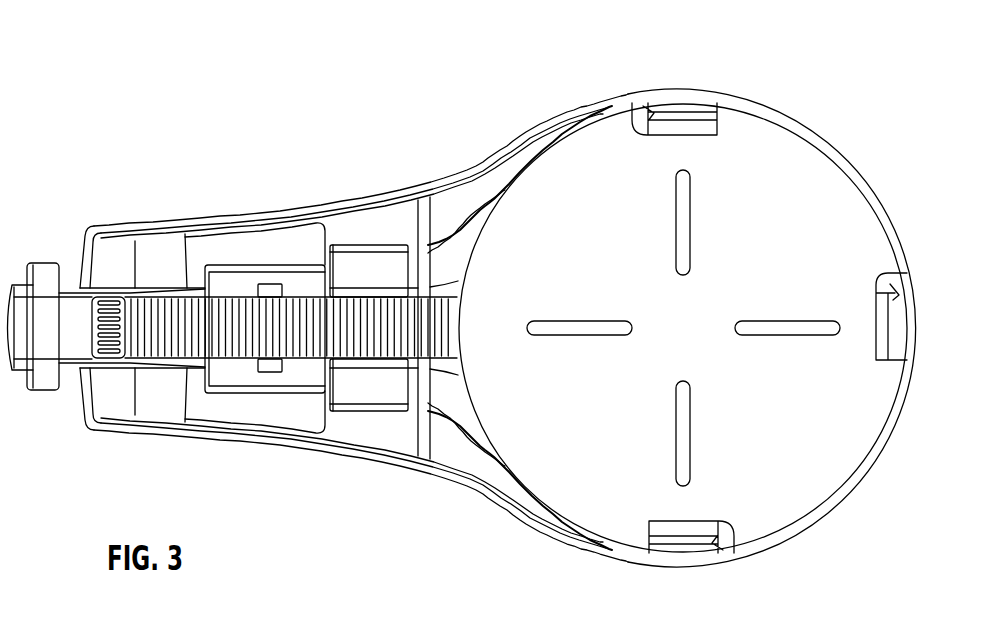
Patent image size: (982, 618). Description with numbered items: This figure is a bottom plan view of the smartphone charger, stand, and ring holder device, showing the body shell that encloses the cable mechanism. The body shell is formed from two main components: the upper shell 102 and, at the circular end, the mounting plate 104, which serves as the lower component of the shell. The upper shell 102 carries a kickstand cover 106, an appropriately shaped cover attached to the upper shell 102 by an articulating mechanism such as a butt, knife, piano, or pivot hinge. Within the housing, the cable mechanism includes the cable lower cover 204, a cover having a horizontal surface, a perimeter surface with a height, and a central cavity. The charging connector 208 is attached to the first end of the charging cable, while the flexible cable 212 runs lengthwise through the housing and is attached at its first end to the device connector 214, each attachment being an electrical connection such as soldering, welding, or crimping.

The upper shell 102 is at (453, 175).
The mounting plate 104 is at (780, 165).
The kickstand cover 106 is at (165, 262).
The cable lower cover 204 is at (360, 390).
The charging connector 208 is at (307, 373).
The flexible cable 212 is at (307, 298).
The device connector 214 is at (43, 273).